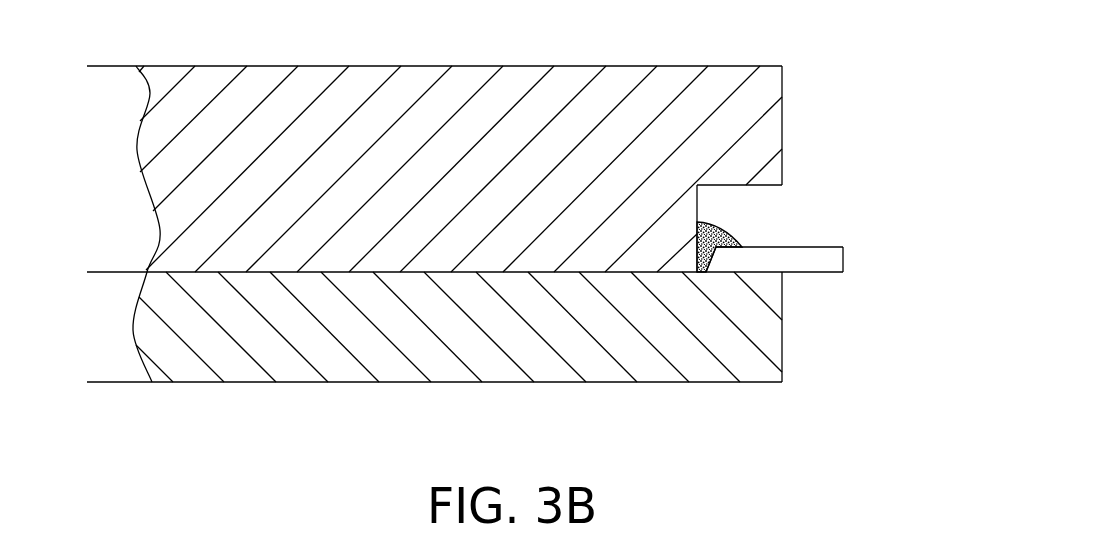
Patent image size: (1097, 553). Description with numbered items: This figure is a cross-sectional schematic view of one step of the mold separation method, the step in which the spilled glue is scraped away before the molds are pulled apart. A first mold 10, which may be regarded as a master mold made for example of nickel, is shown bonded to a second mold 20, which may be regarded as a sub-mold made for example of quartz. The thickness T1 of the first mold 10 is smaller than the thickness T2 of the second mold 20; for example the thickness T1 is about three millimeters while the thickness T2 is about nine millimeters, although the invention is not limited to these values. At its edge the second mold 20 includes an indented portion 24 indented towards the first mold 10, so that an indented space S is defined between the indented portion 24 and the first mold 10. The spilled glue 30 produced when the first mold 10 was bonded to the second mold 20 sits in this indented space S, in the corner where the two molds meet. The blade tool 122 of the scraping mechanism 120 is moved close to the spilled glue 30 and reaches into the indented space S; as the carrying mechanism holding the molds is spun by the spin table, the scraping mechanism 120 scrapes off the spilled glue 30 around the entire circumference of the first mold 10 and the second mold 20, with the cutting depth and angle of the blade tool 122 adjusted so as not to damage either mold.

The first mold 10 is at (658, 365).
The second mold 20 is at (662, 83).
The indented portion 24 is at (633, 227).
The spilled glue 30 is at (727, 233).
The blade tool 122 is at (827, 280).
The scraping mechanism 120 is at (810, 259).
The indented space S is at (770, 203).
The thickness of the first mold T1 is at (93, 272).
The thickness of the second mold T2 is at (93, 66).